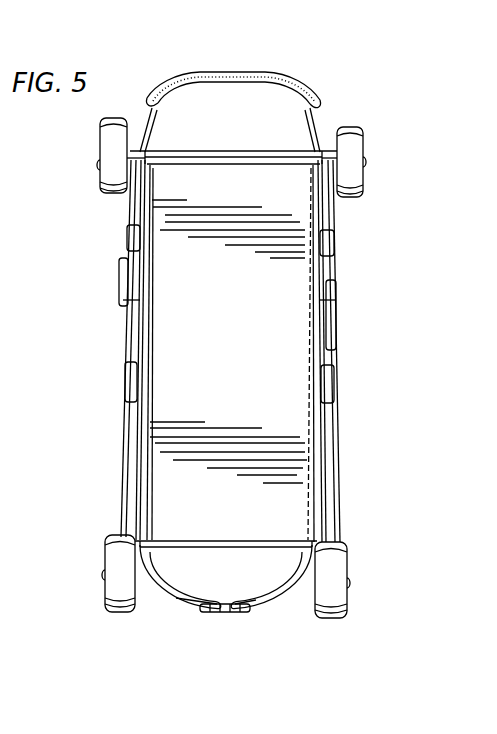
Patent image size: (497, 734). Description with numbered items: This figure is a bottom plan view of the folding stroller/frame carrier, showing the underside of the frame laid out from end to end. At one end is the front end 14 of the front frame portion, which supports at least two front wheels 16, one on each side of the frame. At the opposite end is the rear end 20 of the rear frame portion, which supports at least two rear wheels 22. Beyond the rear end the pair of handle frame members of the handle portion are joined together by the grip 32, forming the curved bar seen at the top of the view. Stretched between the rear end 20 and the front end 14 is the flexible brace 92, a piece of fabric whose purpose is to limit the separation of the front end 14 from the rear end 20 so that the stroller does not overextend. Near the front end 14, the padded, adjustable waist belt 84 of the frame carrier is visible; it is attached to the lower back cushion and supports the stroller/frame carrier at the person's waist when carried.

The front end 14 is at (268, 545).
The front wheels 16 is at (118, 552).
The rear end 20 is at (203, 162).
The rear wheels 22 is at (108, 168).
The grip 32 is at (262, 77).
The waist belt 84 is at (197, 605).
The flexible brace 92 is at (263, 345).